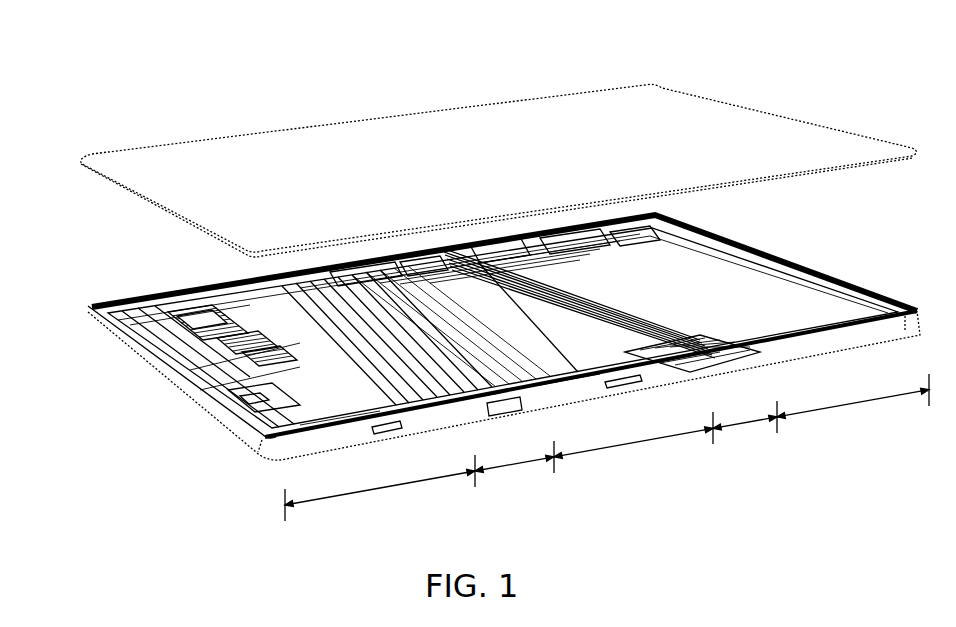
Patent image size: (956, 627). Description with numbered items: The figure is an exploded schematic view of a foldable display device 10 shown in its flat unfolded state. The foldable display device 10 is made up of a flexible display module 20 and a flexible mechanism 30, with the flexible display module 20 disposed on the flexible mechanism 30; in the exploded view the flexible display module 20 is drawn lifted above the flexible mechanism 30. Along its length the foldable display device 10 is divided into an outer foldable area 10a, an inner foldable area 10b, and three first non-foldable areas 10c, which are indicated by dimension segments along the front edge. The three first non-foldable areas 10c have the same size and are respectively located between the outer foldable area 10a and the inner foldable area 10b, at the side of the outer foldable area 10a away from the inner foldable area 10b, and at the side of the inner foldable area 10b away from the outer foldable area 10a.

The foldable display device 10 is at (436, 31).
The flexible display module 20 is at (155, 158).
The flexible mechanism 30 is at (132, 293).
The outer foldable area 10a is at (745, 446).
The inner foldable area 10b is at (514, 486).
The first non-foldable area 10c is at (607, 461).